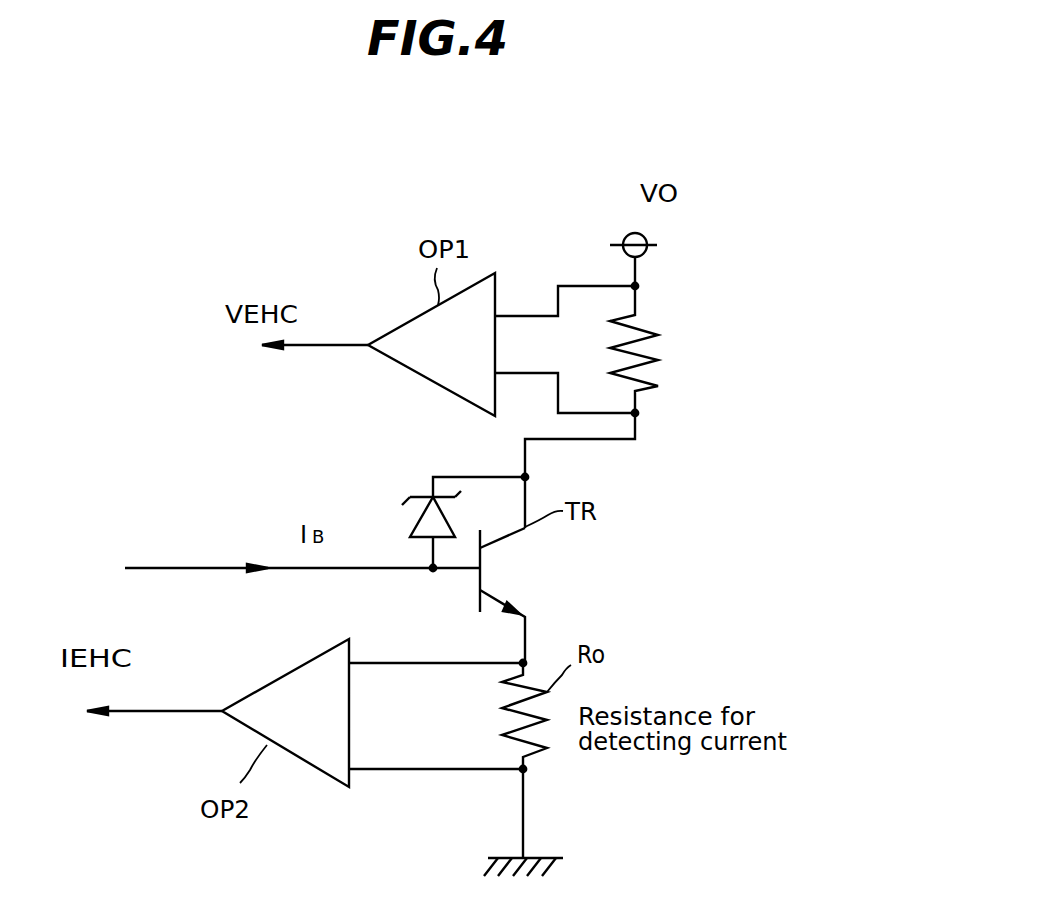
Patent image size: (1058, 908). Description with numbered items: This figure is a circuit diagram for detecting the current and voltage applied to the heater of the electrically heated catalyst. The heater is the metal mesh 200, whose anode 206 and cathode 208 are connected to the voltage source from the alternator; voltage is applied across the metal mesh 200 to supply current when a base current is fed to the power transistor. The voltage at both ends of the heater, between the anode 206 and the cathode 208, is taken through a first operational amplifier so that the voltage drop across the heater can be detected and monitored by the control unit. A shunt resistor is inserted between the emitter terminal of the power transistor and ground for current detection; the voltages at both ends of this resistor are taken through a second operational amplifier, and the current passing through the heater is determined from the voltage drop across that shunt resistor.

The metal mesh 200 is at (660, 390).
The anode 206 is at (637, 283).
The cathode 208 is at (637, 417).